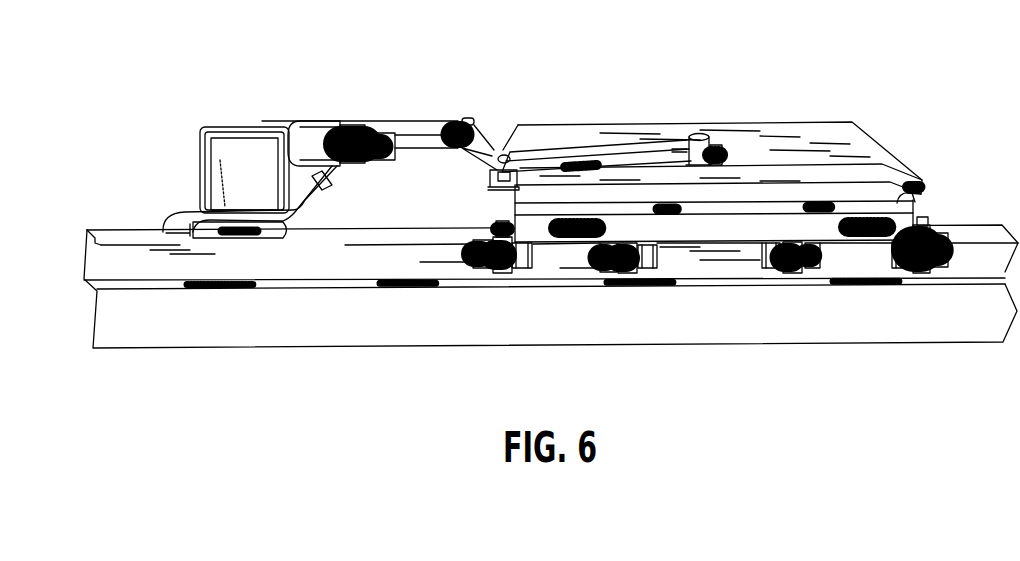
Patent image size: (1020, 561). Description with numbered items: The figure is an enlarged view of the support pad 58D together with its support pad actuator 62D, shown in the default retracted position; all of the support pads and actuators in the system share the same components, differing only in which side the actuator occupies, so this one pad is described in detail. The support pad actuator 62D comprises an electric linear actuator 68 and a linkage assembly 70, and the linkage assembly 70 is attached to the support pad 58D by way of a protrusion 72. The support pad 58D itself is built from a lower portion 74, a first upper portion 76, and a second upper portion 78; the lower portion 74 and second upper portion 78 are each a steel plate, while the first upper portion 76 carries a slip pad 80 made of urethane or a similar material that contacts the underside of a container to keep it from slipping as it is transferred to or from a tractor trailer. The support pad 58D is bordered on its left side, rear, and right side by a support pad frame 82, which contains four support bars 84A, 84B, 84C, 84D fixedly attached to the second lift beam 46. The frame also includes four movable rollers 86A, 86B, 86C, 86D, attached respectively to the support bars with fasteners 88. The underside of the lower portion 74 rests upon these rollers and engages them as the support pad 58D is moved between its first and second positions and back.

The second lift beam 46 is at (247, 332).
The support pad 58D is at (664, 229).
The support pad actuator 62D is at (312, 135).
The electric linear actuator 68 is at (392, 132).
The linkage assembly 70 is at (552, 150).
The protrusion 72 is at (707, 135).
The lower portion 74 is at (900, 222).
The first upper portion 76 is at (629, 177).
The second upper portion 78 is at (742, 140).
The slip pad 80 is at (800, 178).
The support pad frame 82 is at (490, 220).
The support bar 84A is at (500, 271).
The support bar 84B is at (624, 273).
The support bar 84C is at (792, 273).
The support bar 84D is at (922, 273).
The movable roller 86A is at (522, 271).
The movable roller 86B is at (650, 269).
The movable roller 86C is at (768, 269).
The movable roller 86D is at (900, 268).
The fasteners 88 is at (473, 267).